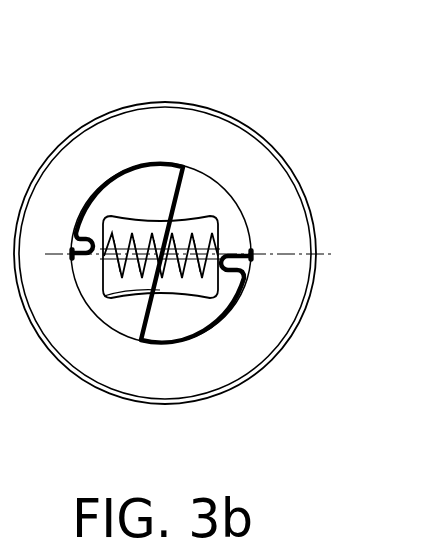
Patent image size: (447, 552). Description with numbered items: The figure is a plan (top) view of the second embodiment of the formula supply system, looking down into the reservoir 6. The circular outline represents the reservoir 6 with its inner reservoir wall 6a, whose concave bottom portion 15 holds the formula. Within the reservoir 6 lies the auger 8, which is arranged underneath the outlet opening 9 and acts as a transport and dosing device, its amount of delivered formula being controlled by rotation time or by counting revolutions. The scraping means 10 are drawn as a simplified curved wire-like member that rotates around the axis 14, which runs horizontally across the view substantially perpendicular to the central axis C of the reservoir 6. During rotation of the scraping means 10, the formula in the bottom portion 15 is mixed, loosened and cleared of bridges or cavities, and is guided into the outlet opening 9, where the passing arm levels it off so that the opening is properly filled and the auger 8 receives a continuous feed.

The reservoir 6 is at (179, 101).
The inner reservoir wall 6a is at (123, 335).
The auger 8 is at (112, 270).
The outlet opening 9 is at (120, 222).
The scraping means 10 is at (227, 327).
The axis 14 is at (207, 248).
The bottom portion 15 is at (130, 313).
The central axis C is at (170, 243).